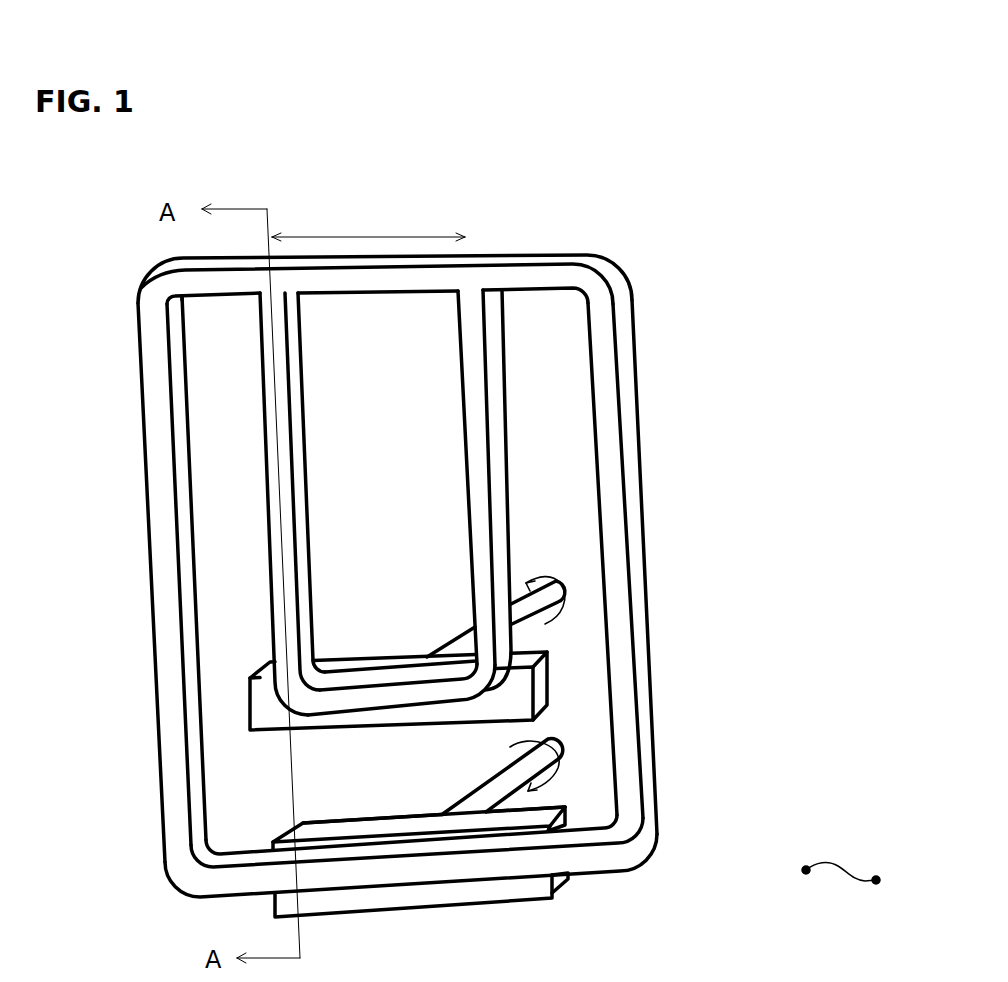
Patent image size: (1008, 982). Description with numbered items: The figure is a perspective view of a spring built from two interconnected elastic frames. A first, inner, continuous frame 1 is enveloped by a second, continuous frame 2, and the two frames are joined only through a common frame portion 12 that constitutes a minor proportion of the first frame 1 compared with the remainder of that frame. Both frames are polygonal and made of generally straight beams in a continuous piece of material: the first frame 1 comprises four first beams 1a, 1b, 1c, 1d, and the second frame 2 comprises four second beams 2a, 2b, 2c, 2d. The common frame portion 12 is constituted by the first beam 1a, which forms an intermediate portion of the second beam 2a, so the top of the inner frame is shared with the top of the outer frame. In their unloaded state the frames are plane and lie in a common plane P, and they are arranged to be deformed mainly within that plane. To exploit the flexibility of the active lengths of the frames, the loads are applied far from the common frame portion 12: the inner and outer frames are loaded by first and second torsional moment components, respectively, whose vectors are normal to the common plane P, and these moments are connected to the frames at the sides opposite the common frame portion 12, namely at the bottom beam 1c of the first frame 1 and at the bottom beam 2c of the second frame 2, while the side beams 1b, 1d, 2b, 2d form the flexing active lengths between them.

The first frame 1 is at (292, 622).
The first beam 1a is at (393, 275).
The first beam 1b is at (280, 470).
The first beam 1c is at (418, 698).
The first beam 1d is at (483, 452).
The second frame 2 is at (414, 577).
The second beam 2a is at (400, 248).
The second beam 2b is at (168, 567).
The second beam 2c is at (247, 882).
The second beam 2d is at (623, 617).
The common frame portion 12 is at (368, 225).
The common plane P is at (853, 879).